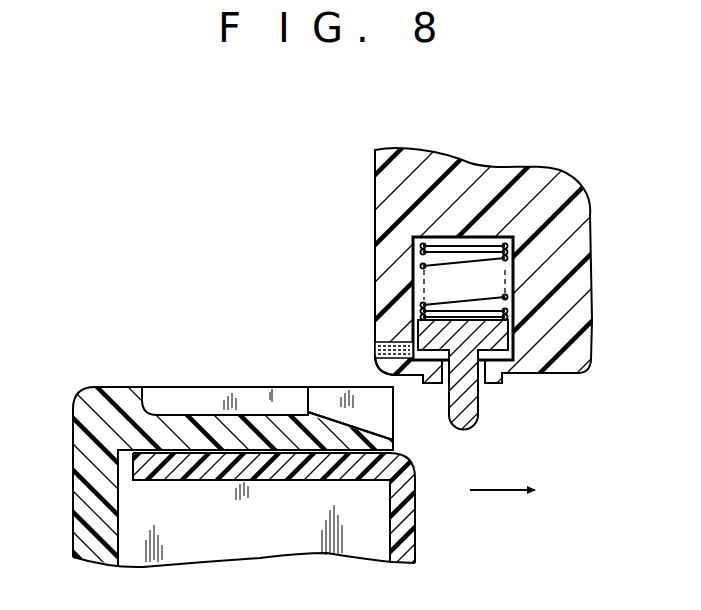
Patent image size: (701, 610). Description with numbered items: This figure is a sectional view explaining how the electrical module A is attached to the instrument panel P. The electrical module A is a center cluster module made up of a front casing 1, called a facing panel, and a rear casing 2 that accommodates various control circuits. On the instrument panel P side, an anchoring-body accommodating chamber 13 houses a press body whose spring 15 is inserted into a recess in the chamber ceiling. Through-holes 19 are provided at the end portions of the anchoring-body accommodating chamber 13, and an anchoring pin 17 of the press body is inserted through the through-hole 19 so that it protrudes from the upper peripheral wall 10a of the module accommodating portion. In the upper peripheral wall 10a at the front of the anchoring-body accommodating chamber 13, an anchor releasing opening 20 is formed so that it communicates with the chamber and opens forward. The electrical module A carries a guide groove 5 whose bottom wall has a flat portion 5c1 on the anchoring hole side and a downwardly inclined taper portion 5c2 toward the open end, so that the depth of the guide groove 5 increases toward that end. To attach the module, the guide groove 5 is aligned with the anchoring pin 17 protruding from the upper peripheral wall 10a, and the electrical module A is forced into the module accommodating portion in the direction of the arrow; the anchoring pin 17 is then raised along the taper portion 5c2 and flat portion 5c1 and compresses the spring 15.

The instrument panel P is at (370, 228).
The electrical module A is at (73, 378).
The anchoring-body accommodating chamber 13 is at (400, 342).
The anchor releasing opening 20 is at (383, 345).
The spring 15 is at (513, 278).
The anchoring pin 17 is at (478, 402).
The through-hole 19 is at (452, 385).
The upper peripheral wall 10a is at (527, 378).
The guide groove 5 is at (267, 370).
The flat portion 5c1 is at (225, 412).
The taper portion 5c2 is at (352, 413).
The front casing 1 is at (398, 443).
The rear casing 2 is at (350, 305).